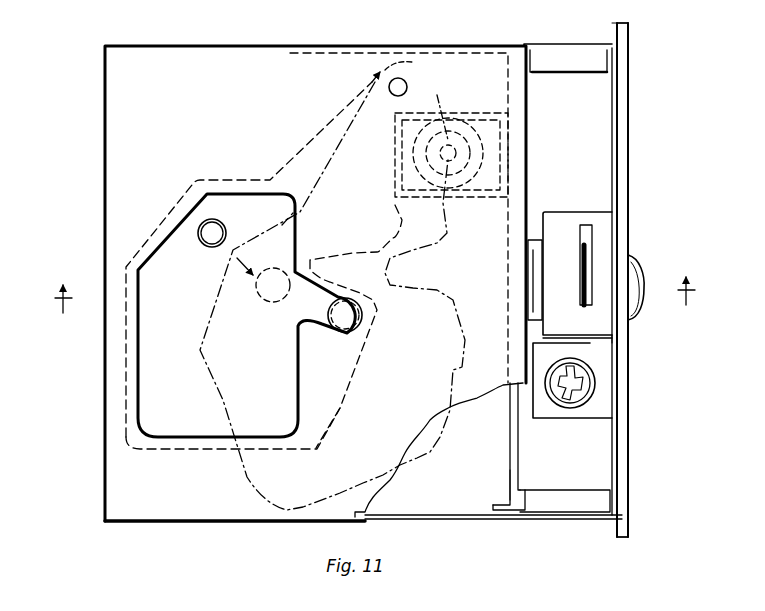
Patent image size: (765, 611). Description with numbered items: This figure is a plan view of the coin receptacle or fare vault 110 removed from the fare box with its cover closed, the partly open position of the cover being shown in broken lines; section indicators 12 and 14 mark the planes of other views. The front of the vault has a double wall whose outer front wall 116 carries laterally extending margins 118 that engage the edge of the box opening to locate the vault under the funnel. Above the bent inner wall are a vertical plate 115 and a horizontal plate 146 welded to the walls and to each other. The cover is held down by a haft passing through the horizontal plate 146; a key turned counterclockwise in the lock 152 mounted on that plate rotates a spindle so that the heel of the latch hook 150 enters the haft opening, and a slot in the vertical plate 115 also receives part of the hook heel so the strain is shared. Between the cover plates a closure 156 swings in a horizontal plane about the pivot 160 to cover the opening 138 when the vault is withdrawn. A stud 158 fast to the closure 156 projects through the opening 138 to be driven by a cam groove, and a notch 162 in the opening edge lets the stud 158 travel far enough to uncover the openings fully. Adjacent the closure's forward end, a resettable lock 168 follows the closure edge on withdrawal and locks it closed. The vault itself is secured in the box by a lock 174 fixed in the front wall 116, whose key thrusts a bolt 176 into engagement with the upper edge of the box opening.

The section line 12 is at (373, 309).
The lock assembly 14 is at (638, 116).
The lock case 110 is at (450, 520).
The vertical plate 115 is at (511, 477).
The front wall 116 is at (629, 437).
The laterally extending margins 118 is at (632, 530).
The opening 138 is at (145, 368).
The horizontal plate 146 is at (585, 155).
The latch hook 150 is at (456, 342).
The lock 152 is at (585, 378).
The closure 156 is at (155, 396).
The stud 158 is at (211, 220).
The pivot 160 is at (400, 78).
The notch 162 is at (319, 327).
The resettable lock 168 is at (440, 80).
The lock 174 is at (640, 283).
The bolt 176 is at (590, 262).